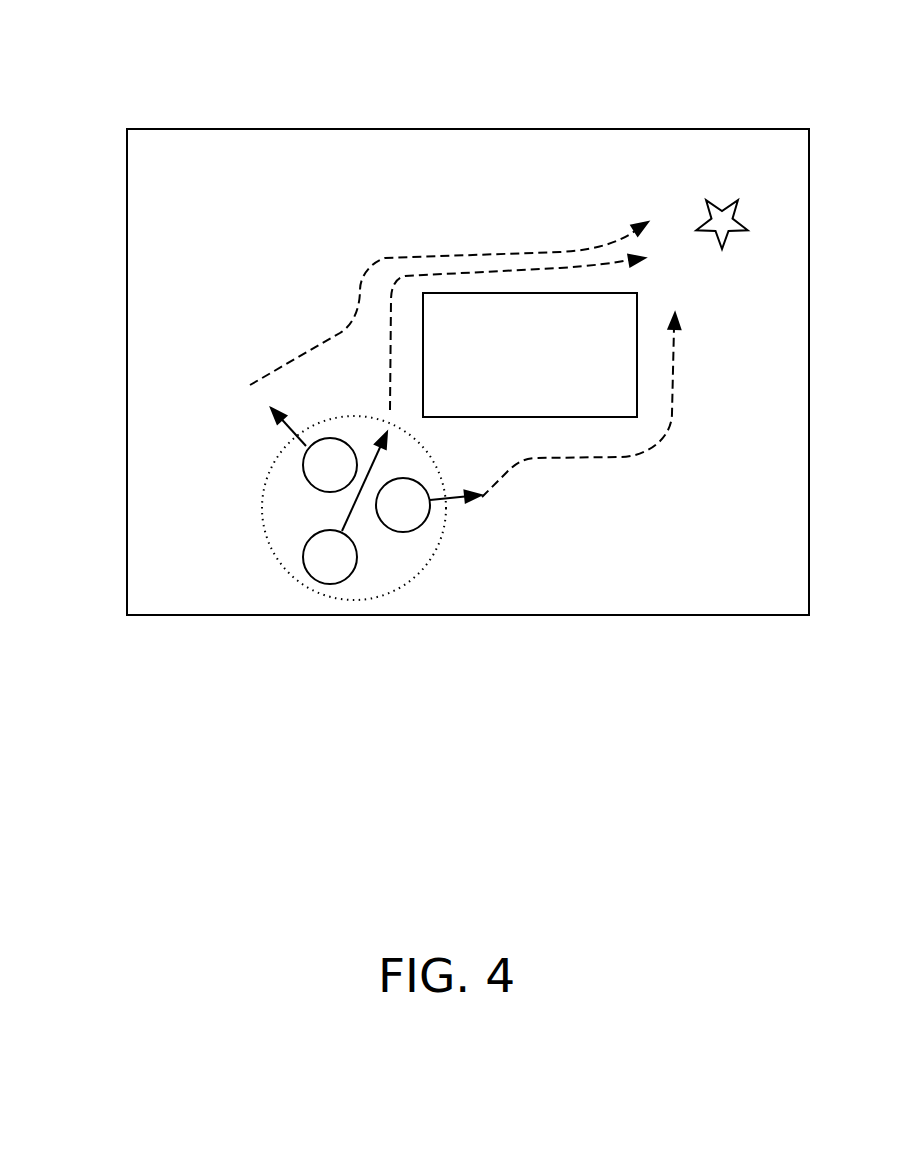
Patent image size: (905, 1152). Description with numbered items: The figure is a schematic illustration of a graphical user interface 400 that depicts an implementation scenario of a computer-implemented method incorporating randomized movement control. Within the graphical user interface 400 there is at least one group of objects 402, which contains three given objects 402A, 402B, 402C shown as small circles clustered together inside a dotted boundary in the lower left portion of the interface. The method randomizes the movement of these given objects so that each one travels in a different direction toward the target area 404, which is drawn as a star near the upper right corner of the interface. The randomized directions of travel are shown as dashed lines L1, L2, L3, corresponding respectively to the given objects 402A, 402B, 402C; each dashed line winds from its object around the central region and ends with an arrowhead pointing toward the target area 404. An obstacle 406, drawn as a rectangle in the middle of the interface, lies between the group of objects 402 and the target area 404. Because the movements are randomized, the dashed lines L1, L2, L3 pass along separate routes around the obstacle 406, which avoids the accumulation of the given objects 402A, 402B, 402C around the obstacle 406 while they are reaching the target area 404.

The graphical user interface 400 is at (140, 150).
The group of objects 402 is at (259, 580).
The given object 402A is at (313, 465).
The given object 402B is at (313, 560).
The given object 402C is at (405, 522).
The target area 404 is at (722, 212).
The obstacle 406 is at (515, 333).
The dashed line L1 is at (287, 363).
The dashed line L2 is at (403, 275).
The dashed line L3 is at (523, 475).